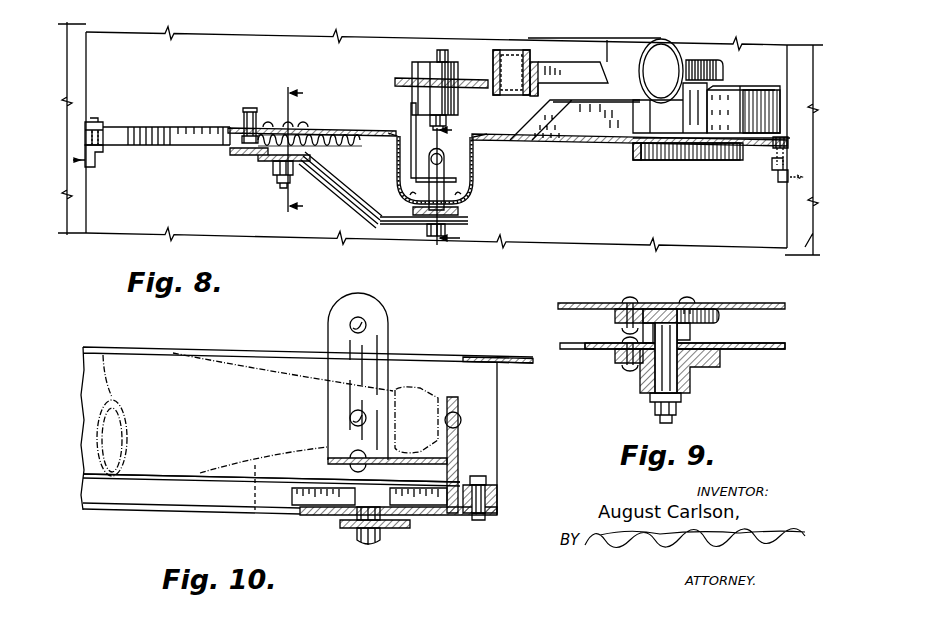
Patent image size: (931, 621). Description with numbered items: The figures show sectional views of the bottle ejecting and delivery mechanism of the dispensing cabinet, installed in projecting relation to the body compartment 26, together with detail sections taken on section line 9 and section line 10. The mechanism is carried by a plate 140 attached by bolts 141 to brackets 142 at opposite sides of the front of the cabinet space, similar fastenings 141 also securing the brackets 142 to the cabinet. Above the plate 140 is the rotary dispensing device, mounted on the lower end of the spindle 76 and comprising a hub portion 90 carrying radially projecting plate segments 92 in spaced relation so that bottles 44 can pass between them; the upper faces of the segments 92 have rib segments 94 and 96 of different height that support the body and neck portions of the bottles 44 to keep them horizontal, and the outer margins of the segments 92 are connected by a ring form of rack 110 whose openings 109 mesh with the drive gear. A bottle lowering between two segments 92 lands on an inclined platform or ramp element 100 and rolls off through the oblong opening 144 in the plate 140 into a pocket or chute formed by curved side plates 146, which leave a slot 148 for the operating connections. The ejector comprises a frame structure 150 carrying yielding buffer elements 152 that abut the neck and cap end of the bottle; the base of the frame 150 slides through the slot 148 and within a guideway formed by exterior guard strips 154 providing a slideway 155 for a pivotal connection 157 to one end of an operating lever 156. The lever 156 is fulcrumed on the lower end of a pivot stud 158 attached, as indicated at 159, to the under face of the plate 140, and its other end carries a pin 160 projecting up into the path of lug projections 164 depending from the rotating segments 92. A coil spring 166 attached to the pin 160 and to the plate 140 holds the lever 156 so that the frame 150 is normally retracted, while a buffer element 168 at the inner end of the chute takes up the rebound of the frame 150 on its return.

In FIG. 8, the body compartment 26 is at (122, 53).
In FIG. 8, the ring form of rack 110 is at (786, 75).
In FIG. 8, the openings 109 is at (804, 150).
In FIG. 8, the bolts 141 is at (92, 120).
In FIG. 8, the brackets 142 is at (100, 150).
In FIG. 8, the plate 140 is at (232, 127).
In FIG. 10, the plate 140 is at (105, 347).
In FIG. 9, the plate 140 is at (575, 303).
In FIG. 8, the pin 160 is at (253, 108).
In FIG. 8, the coil spring 166 is at (338, 133).
In FIG. 8, the section line 9— 9 is at (304, 150).
In FIG. 8, the section line 10— 10 is at (463, 181).
In FIG. 8, the pivot stud 158 is at (278, 184).
In FIG. 9, the pivot stud 158 is at (677, 421).
In FIG. 8, the operating lever 156 is at (380, 226).
In FIG. 10, the operating lever 156 is at (343, 529).
In FIG. 9, the operating lever 156 is at (766, 344).
In FIG. 8, the slideway 155 is at (418, 226).
In FIG. 10, the slideway 155 is at (281, 512).
In FIG. 8, the hub portion 90 is at (412, 72).
In FIG. 8, the spindle 76 is at (437, 56).
In FIG. 8, the oblong opening 144 is at (411, 125).
In FIG. 10, the oblong opening 144 is at (286, 347).
In FIG. 8, the rib segments 96 is at (495, 50).
In FIG. 8, the rib segments 94 is at (565, 62).
In FIG. 8, the bottles 44 is at (660, 42).
In FIG. 10, the bottles 44 is at (267, 446).
In FIG. 8, the plate segments 92 is at (740, 87).
In FIG. 8, the lug projections 164 is at (697, 125).
In FIG. 8, the inclined platform or ramp element 100 is at (585, 112).
In FIG. 8, the curved side plates 146 is at (397, 158).
In FIG. 10, the curved side plates 146 is at (480, 427).
In FIG. 8, the slot 148 is at (456, 206).
In FIG. 10, the slot 148 is at (220, 477).
In FIG. 8, the frame structure 150 is at (428, 188).
In FIG. 10, the frame structure 150 is at (460, 462).
In FIG. 8, the yielding buffer elements 152 is at (440, 156).
In FIG. 10, the yielding buffer elements 152 is at (366, 325).
In FIG. 8, the exterior guard strips 154 is at (460, 214).
In FIG. 10, the exterior guard strips 154 is at (463, 516).
In FIG. 8, the pivotal connection 157 is at (446, 229).
In FIG. 10, the pivotal connection 157 is at (383, 541).
In FIG. 10, the buffer element 168 is at (499, 497).
In FIG. 9, the attachment of pivot stud 159 is at (637, 299).